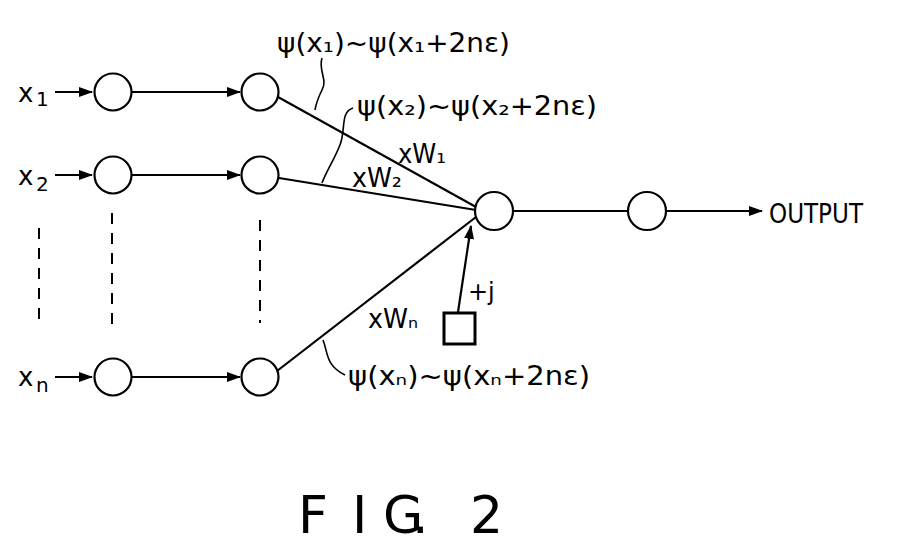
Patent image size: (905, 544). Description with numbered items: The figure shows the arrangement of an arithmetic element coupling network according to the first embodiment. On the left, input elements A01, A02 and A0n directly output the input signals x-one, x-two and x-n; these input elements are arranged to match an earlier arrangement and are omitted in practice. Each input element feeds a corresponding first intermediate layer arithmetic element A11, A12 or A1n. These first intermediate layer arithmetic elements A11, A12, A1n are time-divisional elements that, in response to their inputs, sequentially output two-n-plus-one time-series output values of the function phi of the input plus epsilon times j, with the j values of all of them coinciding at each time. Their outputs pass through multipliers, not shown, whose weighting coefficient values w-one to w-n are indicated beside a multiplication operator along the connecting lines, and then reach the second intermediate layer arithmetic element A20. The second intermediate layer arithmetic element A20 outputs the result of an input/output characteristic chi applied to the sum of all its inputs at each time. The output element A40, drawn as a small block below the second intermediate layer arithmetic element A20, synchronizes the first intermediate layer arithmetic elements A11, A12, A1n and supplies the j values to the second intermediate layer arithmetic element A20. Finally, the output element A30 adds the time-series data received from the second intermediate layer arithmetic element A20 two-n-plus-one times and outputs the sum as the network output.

The input element A01 is at (112, 73).
The input element A02 is at (112, 156).
The input element A0n is at (124, 360).
The first intermediate layer arithmetic element A11 is at (262, 110).
The first intermediate layer arithmetic element A12 is at (266, 193).
The first intermediate layer arithmetic element A1n is at (264, 395).
The second intermediate layer arithmetic element A20 is at (505, 228).
The output element A30 is at (658, 228).
The output element A40 is at (476, 325).